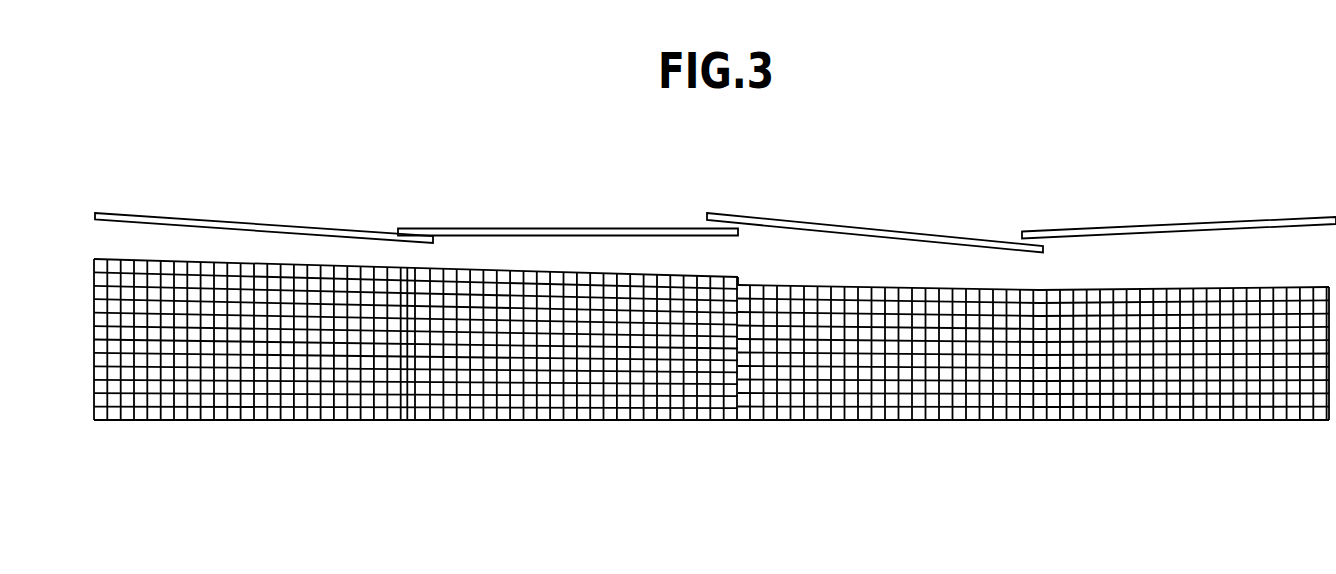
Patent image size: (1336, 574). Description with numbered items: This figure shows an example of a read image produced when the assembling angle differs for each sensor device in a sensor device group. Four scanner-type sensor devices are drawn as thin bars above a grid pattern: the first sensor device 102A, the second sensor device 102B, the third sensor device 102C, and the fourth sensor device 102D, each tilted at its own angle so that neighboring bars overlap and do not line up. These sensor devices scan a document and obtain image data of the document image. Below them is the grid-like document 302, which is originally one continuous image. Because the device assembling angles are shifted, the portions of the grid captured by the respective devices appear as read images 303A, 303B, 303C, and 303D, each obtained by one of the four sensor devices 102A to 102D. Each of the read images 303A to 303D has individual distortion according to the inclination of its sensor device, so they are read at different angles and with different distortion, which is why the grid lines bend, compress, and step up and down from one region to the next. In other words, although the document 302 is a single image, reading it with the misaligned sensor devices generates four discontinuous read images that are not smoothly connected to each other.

The first sensor device 102A is at (247, 223).
The second sensor device 102B is at (563, 228).
The third sensor device 102C is at (855, 227).
The fourth sensor device 102D is at (1173, 225).
The grid-like document 302 is at (890, 288).
The read image 303A is at (322, 421).
The read image 303B is at (687, 413).
The read image 303C is at (938, 421).
The read image 303D is at (1232, 421).